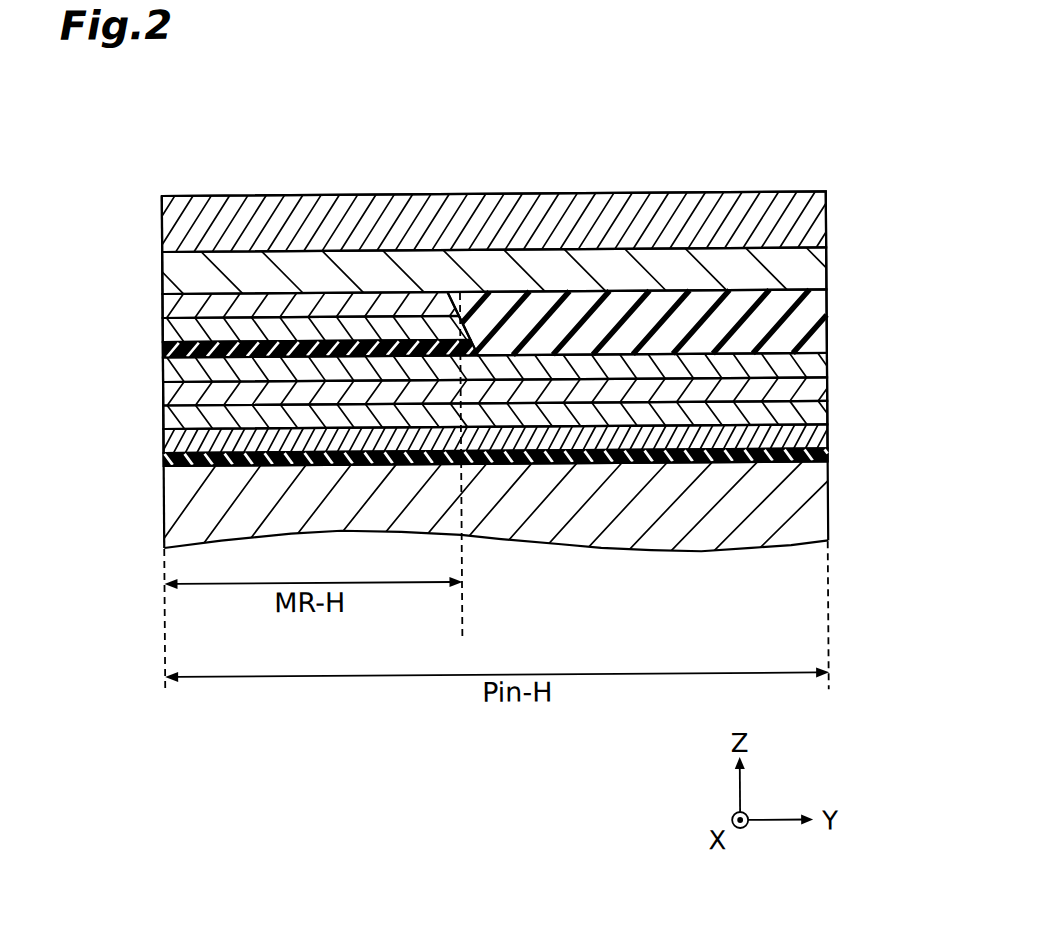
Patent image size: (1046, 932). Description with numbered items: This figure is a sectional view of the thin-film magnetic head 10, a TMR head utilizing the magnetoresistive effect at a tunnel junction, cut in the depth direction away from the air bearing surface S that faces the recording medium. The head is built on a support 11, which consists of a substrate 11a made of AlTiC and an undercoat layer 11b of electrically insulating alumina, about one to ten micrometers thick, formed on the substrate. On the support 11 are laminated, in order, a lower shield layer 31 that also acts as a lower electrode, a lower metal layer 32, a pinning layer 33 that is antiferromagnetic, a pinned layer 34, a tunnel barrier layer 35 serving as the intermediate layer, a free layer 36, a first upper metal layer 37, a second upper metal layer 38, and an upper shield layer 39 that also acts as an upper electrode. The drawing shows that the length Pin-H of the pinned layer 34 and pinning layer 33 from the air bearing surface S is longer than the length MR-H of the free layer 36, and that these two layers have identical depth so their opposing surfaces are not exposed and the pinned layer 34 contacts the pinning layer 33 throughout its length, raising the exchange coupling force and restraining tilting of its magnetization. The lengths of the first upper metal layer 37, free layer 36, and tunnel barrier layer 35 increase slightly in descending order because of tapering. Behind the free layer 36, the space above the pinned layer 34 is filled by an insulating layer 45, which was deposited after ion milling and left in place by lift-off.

The thin-film magnetic head 10 is at (793, 137).
The support 11 is at (432, 504).
The substrate 11a is at (78, 470).
The undercoat layer 11b is at (163, 460).
The lower shield layer 31 is at (163, 441).
The lower metal layer 32 is at (163, 417).
The pinning layer 33 is at (163, 393).
The pinned layer 34 is at (163, 368).
The tunnel barrier layer 35 is at (163, 350).
The free layer 36 is at (163, 329).
The first upper metal layer 37 is at (163, 305).
The second upper metal layer 38 is at (163, 273).
The upper shield layer 39 is at (163, 223).
The insulating layer 45 is at (827, 317).
The air bearing surface S is at (163, 549).